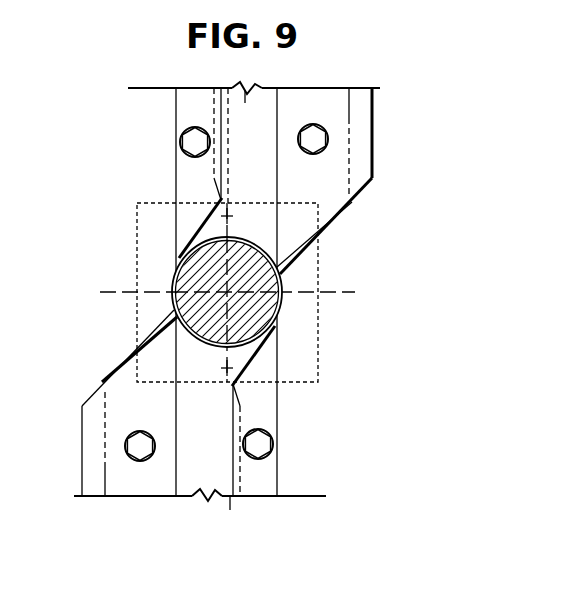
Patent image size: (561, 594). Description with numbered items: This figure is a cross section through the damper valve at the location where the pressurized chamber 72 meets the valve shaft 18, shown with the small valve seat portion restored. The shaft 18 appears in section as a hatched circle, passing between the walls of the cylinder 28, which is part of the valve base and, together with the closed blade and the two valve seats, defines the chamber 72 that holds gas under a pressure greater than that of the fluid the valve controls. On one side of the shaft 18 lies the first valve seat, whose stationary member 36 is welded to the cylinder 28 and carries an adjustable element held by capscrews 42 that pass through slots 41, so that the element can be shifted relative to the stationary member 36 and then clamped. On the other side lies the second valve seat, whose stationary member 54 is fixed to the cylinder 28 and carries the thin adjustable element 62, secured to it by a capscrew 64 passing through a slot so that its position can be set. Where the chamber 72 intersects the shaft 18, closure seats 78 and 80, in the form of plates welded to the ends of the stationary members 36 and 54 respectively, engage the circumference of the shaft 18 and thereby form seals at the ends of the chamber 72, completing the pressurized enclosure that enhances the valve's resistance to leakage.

The shaft 18 is at (268, 318).
The cylinder 28 is at (262, 88).
The stationary member 36 is at (350, 120).
The slots 41 is at (335, 192).
The capscrews 42 is at (320, 143).
The stationary member 54 is at (213, 115).
The adjustable element 62 is at (185, 193).
The capscrew 64 is at (190, 148).
The chamber 72 is at (240, 84).
The closure seat 78 is at (342, 218).
The closure seat 80 is at (208, 223).